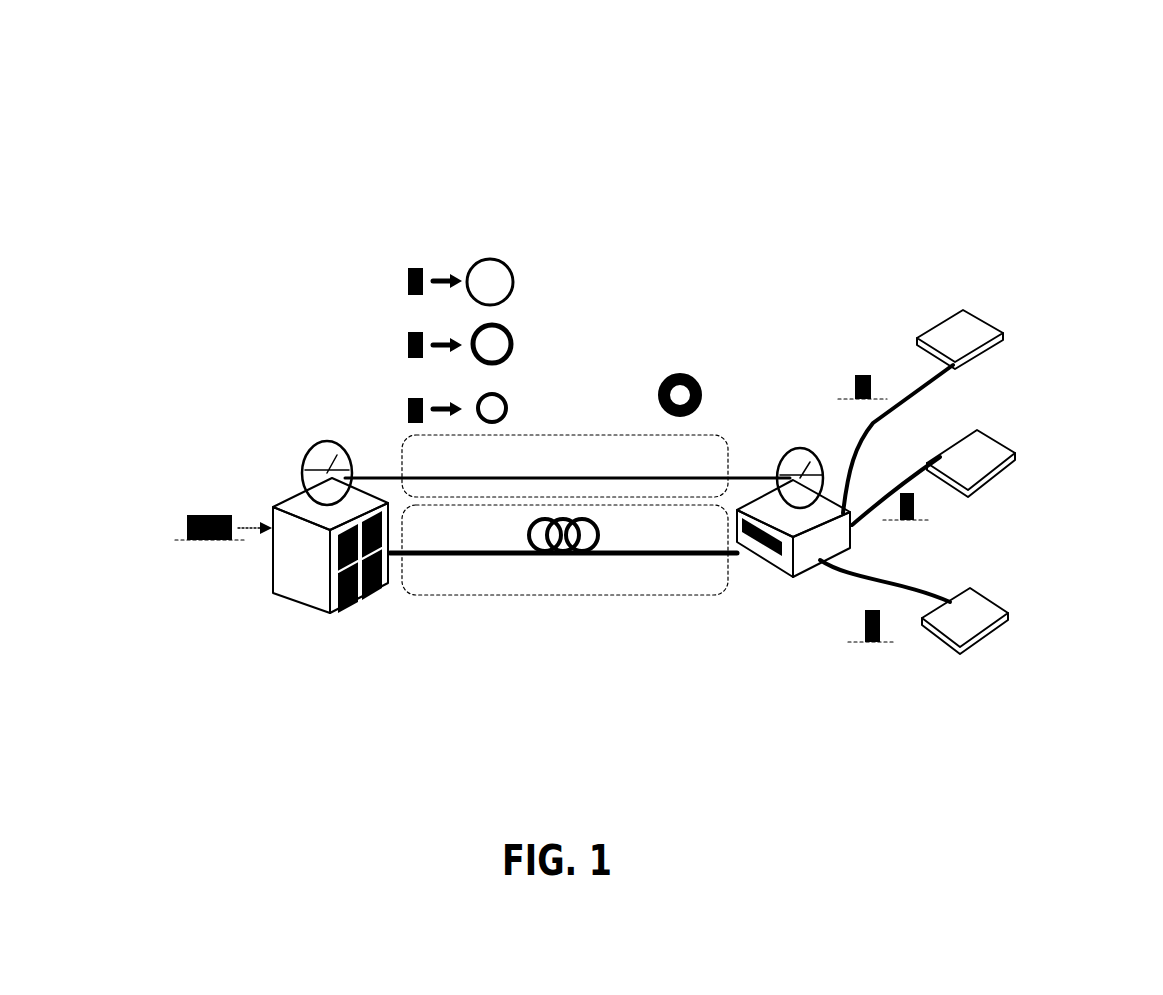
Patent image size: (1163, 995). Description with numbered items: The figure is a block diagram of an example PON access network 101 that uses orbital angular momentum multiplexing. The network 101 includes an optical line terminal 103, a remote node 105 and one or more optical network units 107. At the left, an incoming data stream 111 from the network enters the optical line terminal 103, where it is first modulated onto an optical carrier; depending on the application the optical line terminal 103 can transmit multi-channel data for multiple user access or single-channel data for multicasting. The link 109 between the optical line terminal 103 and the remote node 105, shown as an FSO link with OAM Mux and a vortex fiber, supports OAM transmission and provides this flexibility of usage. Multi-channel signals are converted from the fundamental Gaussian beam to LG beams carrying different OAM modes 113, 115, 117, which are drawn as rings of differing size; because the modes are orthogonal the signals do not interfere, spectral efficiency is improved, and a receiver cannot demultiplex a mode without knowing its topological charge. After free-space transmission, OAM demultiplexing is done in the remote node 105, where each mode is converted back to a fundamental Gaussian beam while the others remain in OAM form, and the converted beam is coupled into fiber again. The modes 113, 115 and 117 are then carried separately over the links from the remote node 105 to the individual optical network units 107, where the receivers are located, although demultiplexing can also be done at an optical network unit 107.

The PON access network 101 is at (696, 178).
The optical line terminal 103 is at (313, 667).
The remote node 105 is at (783, 633).
The optical network unit 107 is at (1012, 342).
The link 109 is at (550, 433).
The data stream 111 is at (195, 500).
The OAM mode 113 is at (405, 278).
The OAM mode 115 is at (400, 342).
The OAM mode 117 is at (400, 410).